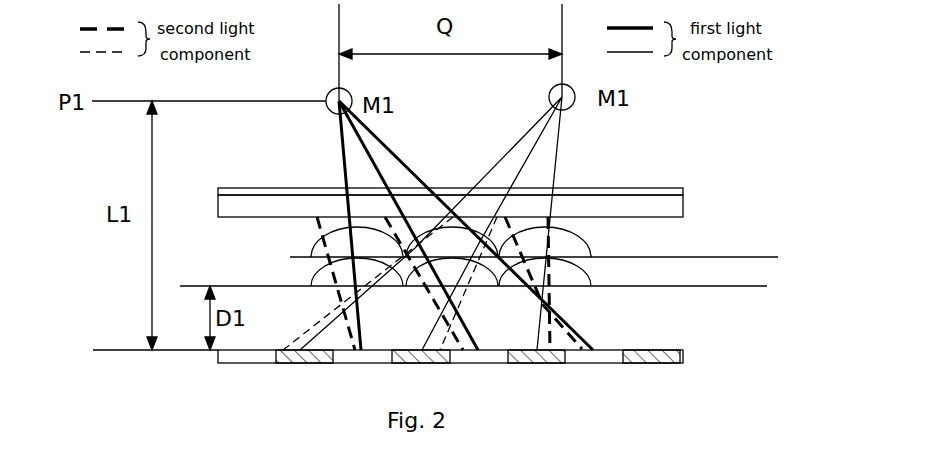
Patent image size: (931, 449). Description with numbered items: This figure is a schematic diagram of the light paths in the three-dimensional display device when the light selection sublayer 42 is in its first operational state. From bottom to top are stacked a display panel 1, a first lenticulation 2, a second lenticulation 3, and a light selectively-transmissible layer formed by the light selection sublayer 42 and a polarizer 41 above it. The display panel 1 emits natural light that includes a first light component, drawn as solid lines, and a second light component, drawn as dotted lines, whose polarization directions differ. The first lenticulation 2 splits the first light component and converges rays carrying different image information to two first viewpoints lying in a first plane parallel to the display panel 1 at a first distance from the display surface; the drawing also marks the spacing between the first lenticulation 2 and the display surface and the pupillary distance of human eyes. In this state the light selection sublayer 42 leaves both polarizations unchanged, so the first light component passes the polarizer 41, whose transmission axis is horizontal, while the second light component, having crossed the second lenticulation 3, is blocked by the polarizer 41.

The display panel 1 is at (683, 359).
The first lenticulation 2 is at (492, 279).
The second lenticulation 3 is at (552, 250).
The polarizer 41 is at (683, 192).
The light selection sublayer 42 is at (683, 210).